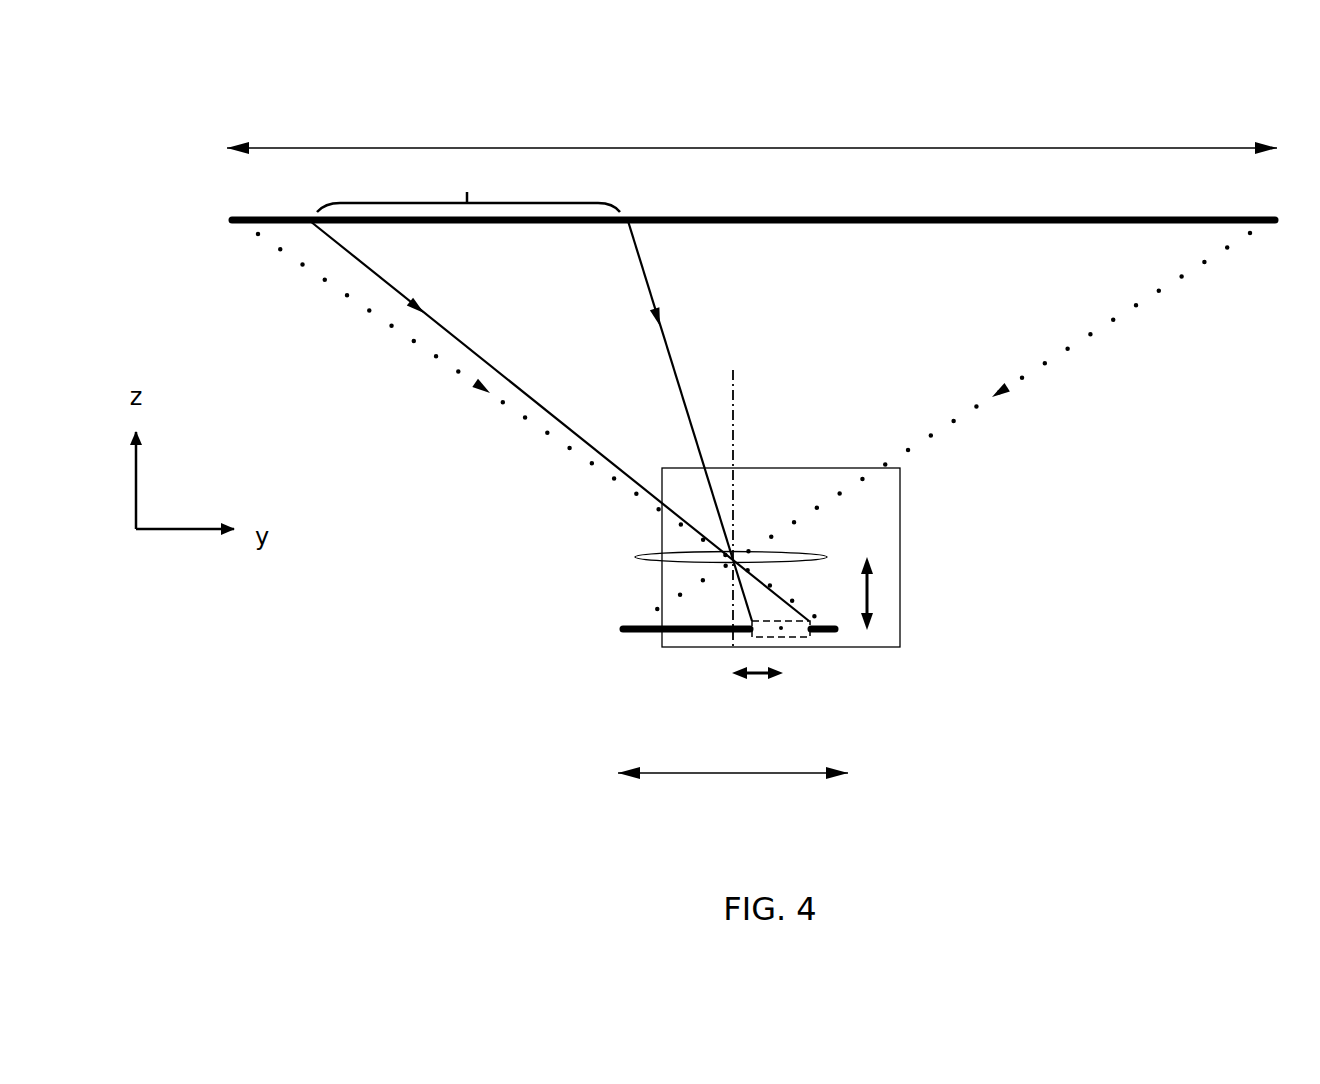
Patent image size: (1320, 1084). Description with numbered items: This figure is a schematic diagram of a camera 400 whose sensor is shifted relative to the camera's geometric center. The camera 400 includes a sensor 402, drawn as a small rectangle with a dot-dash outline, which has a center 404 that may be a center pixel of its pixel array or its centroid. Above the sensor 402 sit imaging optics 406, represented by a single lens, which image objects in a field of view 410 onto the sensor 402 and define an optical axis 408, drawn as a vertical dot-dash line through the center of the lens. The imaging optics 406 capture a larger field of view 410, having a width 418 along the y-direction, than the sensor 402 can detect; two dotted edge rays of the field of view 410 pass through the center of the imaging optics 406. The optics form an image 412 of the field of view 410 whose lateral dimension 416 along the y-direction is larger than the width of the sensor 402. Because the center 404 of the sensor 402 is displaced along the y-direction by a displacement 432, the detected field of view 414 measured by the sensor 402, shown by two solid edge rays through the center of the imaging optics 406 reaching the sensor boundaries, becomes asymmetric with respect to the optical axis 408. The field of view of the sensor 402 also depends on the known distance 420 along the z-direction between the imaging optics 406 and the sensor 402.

The camera 400 is at (850, 527).
The sensor 402 is at (795, 634).
The center 404 is at (781, 628).
The imaging optics 406 is at (638, 557).
The optical axis 408 is at (735, 432).
The field of view 410 is at (1105, 212).
The image 412 is at (625, 629).
The detected field of view 414 is at (468, 186).
The lateral dimension 416 is at (790, 775).
The width 418 is at (695, 147).
The distance 420 is at (870, 598).
The displacement 432 is at (757, 676).